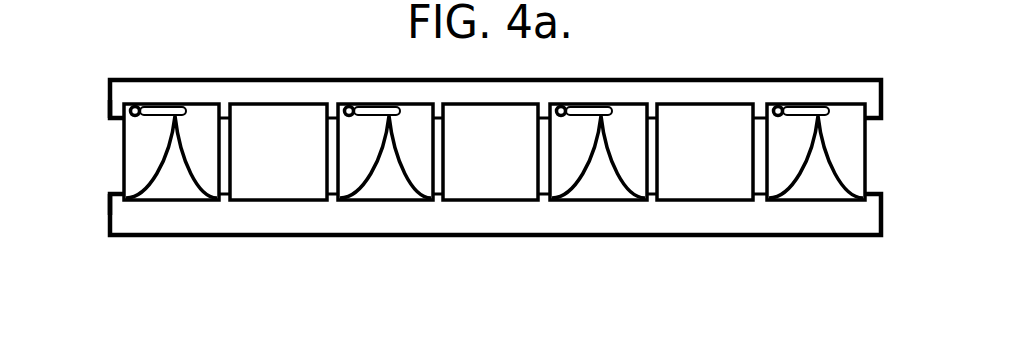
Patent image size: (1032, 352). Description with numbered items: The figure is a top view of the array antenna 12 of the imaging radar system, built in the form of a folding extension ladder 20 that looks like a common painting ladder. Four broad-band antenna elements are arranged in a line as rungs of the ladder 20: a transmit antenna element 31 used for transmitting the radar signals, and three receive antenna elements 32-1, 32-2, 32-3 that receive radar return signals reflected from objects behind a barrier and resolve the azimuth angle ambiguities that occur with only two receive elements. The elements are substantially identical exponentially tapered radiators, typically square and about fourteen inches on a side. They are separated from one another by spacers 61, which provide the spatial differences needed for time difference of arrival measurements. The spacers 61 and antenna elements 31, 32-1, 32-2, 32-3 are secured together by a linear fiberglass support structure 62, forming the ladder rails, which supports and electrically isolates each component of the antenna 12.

The array antenna 12 is at (886, 306).
The folding extension ladder 20 is at (773, 77).
The fiberglass support structure 62 is at (107, 105).
The spacers 61 is at (278, 190).
The transmit antenna element 31 is at (579, 264).
The receive antenna element 32-1 is at (789, 264).
The receive antenna element 32-2 is at (371, 264).
The receive antenna element 32-3 is at (161, 264).